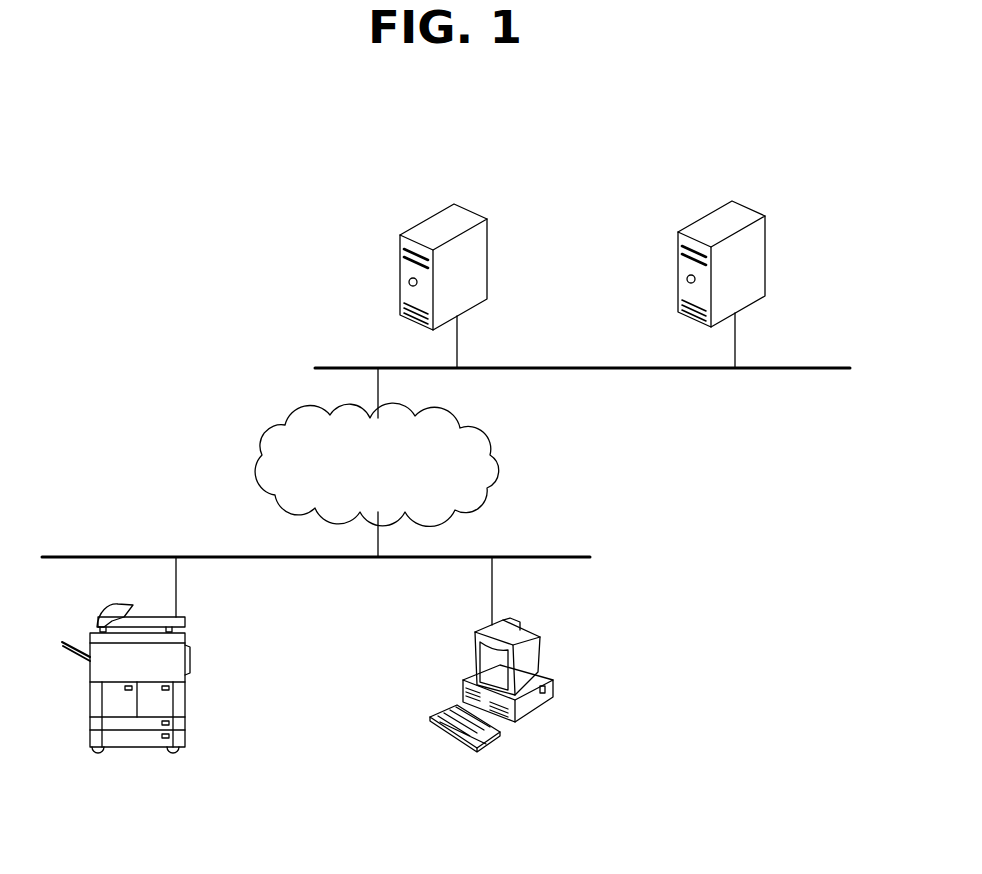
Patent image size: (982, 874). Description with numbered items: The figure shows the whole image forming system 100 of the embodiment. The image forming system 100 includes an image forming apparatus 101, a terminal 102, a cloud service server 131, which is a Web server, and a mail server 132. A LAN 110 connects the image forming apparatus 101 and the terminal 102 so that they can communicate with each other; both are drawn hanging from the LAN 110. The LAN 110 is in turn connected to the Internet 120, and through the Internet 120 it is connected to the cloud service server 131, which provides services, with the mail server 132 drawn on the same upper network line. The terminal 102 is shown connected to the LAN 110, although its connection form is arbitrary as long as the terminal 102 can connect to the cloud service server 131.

The image forming system 100 is at (750, 632).
The image forming apparatus 101 is at (188, 665).
The terminal 102 is at (540, 657).
The LAN 110 is at (77, 555).
The Internet 120 is at (488, 442).
The cloud service server 131 is at (490, 262).
The mail server 132 is at (768, 262).